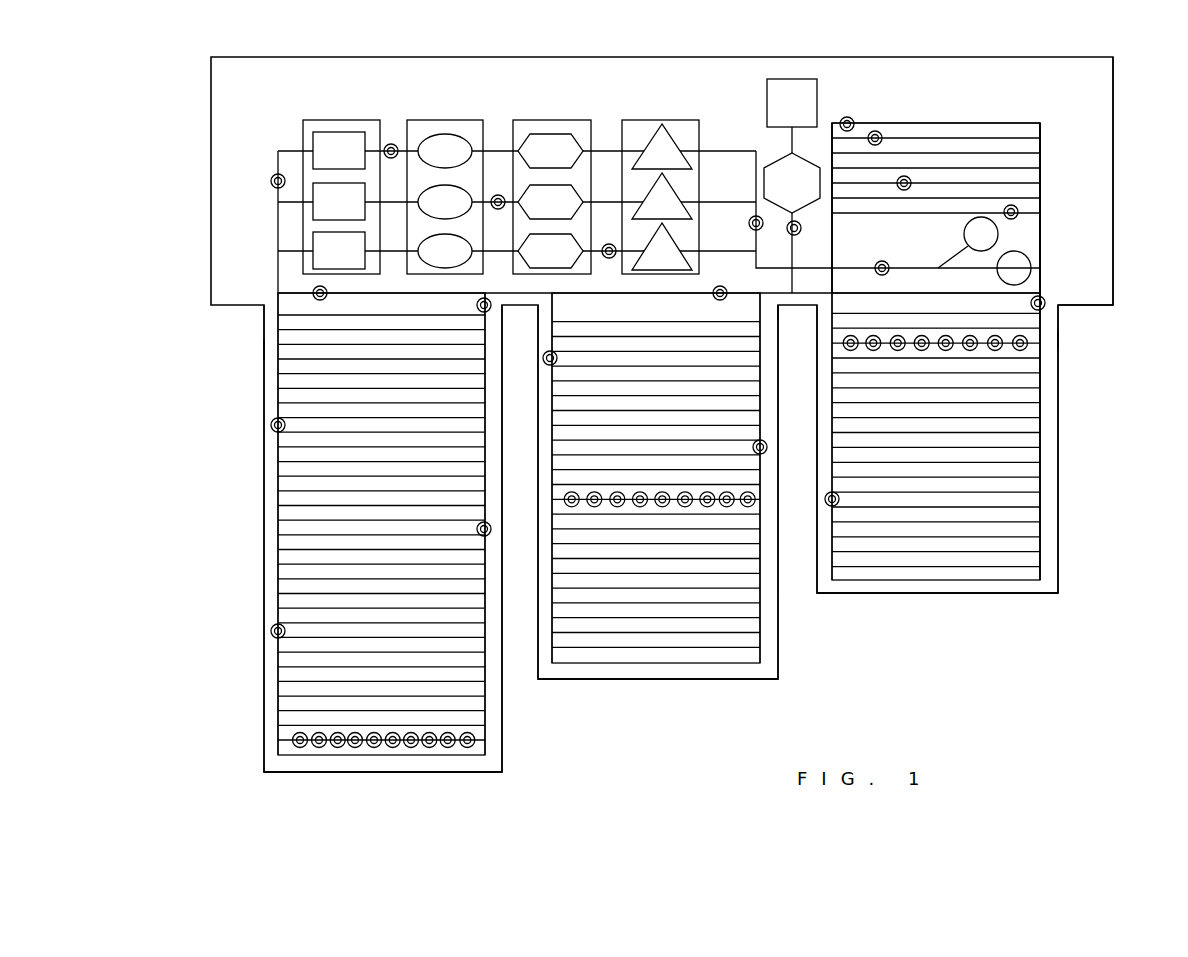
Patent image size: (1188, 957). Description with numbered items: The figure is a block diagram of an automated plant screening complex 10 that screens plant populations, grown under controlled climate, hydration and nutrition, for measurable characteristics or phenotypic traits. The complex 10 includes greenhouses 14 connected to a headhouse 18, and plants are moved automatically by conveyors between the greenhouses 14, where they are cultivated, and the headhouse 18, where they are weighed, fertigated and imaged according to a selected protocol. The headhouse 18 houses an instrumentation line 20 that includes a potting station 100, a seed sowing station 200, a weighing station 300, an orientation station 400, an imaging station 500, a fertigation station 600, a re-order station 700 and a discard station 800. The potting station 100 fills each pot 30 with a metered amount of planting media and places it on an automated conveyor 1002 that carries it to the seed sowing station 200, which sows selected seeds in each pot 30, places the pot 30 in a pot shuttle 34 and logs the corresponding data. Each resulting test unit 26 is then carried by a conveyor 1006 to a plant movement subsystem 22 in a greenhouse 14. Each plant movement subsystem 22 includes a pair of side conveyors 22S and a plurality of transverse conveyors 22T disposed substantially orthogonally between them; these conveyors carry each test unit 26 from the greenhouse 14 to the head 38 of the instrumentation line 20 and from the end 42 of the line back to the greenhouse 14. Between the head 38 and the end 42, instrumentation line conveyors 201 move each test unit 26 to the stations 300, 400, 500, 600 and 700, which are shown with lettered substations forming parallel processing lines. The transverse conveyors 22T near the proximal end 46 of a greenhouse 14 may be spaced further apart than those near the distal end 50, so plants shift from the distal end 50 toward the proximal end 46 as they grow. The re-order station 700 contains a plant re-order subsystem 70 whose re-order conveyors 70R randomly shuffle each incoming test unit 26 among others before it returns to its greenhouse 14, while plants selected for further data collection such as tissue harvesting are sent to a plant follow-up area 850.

The automated plant screening complex 10 is at (1126, 140).
The greenhouse 14 is at (497, 762).
The headhouse 18 is at (1095, 223).
The instrumentation line 20 is at (477, 150).
The plant movement subsystem 22 is at (275, 535).
The transverse conveyor 22T is at (360, 327).
The side conveyor 22S is at (278, 383).
The test unit 26 is at (389, 142).
The pot 30 is at (270, 181).
The pot shuttle 34 is at (280, 166).
The head of the instrumentation line 38 is at (275, 232).
The end of the instrumentation line 42 is at (1047, 211).
The proximal end of the greenhouse 46 is at (264, 352).
The distal end of the greenhouse 50 is at (455, 774).
The plant re-order subsystem 70 is at (994, 122).
The re-order conveyor 70R is at (827, 140).
The potting station 100 is at (767, 108).
The seed sowing station 200 is at (786, 153).
The instrumentation line conveyor 201 is at (285, 251).
The weighing station 300 is at (305, 120).
The orientation station 400 is at (437, 120).
The imaging station 500 is at (553, 120).
The fertigation station 600 is at (660, 120).
The re-order station 700 is at (963, 110).
The discard station 800 is at (978, 234).
The plant follow-up area 850 is at (1025, 270).
The automated conveyor 1002 is at (805, 128).
The conveyor 1006 is at (803, 250).